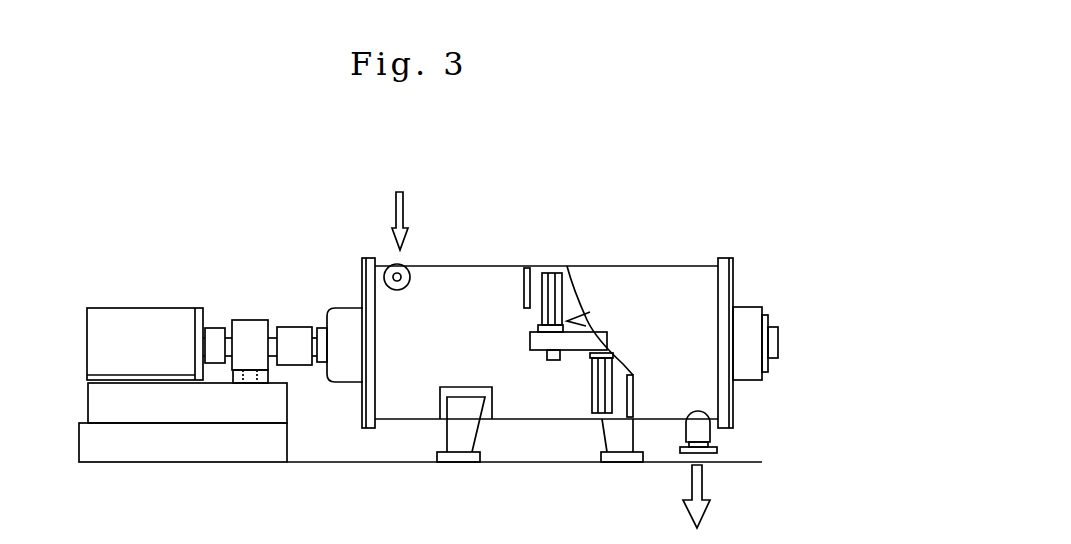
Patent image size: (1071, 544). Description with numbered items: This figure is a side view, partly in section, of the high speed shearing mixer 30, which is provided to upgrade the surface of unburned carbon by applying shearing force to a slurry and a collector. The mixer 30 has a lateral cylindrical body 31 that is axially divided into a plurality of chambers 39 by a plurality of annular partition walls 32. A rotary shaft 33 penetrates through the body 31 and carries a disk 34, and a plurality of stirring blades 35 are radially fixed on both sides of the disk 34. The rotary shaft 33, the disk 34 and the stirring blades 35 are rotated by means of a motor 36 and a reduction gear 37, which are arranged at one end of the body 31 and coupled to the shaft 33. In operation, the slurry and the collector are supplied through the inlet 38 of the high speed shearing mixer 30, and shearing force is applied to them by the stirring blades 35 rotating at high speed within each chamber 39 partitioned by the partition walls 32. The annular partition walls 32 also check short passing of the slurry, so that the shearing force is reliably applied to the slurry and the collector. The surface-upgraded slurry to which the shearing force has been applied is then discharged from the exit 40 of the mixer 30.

The high speed shearing mixer 30 is at (693, 258).
The lateral cylindrical body 31 is at (512, 420).
The annular partition wall 32 is at (558, 362).
The rotary shaft 33 is at (590, 355).
The disk 34 is at (548, 273).
The stirring blade 35 is at (528, 293).
The motor 36 is at (152, 308).
The reduction gear 37 is at (255, 320).
The inlet 38 is at (415, 268).
The chamber 39 is at (567, 321).
The exit 40 is at (718, 450).